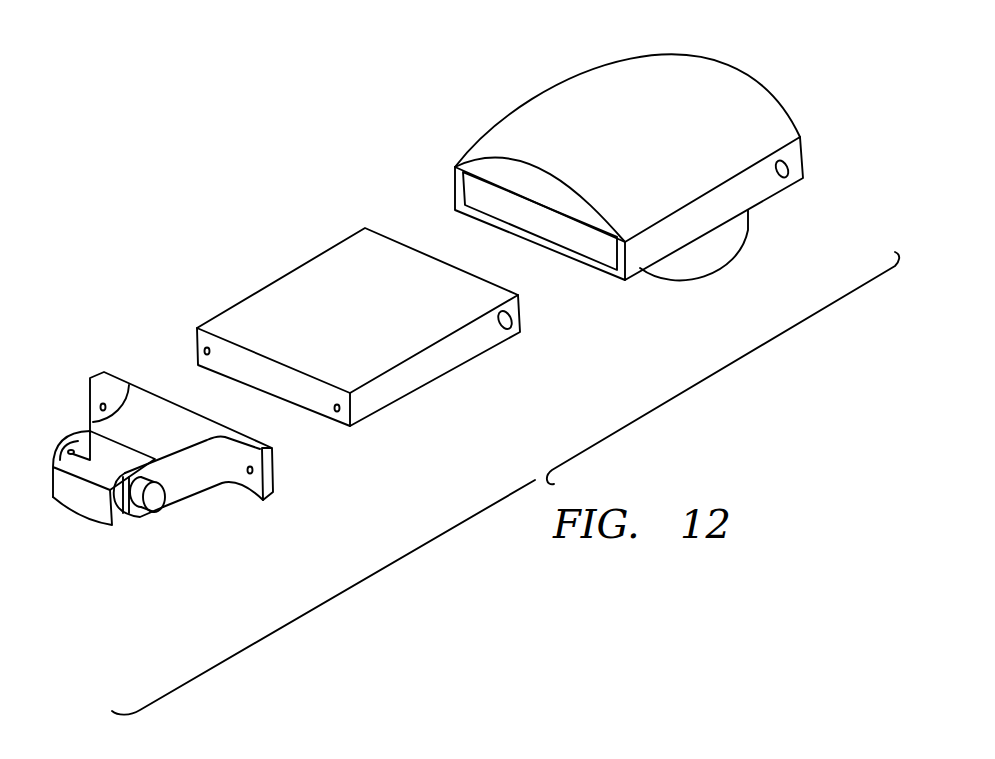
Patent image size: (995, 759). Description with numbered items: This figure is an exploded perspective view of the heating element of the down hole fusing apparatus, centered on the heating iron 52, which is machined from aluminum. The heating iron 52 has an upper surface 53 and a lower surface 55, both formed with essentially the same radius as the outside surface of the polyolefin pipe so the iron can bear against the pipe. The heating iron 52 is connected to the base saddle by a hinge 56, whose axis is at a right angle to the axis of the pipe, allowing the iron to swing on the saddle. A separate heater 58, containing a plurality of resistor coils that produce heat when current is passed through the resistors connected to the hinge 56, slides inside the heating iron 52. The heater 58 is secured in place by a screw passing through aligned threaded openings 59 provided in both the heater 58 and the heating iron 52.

The heating iron 52 is at (155, 246).
The upper surface 53 is at (602, 102).
The lower surface 55 is at (663, 280).
The hinge 56 is at (178, 485).
The heater 58 is at (297, 285).
The aligned threaded openings 59 is at (790, 165).